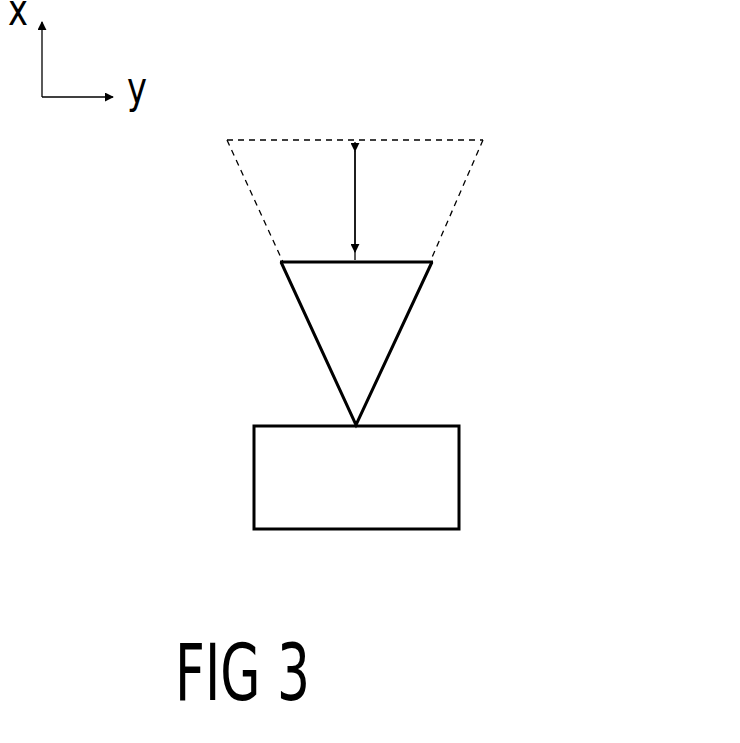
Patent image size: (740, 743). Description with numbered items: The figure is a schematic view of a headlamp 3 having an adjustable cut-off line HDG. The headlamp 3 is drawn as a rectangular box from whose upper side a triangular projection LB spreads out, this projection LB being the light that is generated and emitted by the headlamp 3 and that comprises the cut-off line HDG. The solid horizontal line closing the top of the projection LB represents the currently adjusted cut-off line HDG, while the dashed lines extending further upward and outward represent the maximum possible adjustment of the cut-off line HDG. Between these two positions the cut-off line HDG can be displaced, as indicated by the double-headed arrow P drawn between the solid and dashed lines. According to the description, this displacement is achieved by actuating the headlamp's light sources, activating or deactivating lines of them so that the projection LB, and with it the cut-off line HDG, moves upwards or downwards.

The headlamp 3 is at (272, 480).
The projection LB is at (350, 318).
The cut-off line HDG is at (425, 141).
The arrow P is at (371, 201).